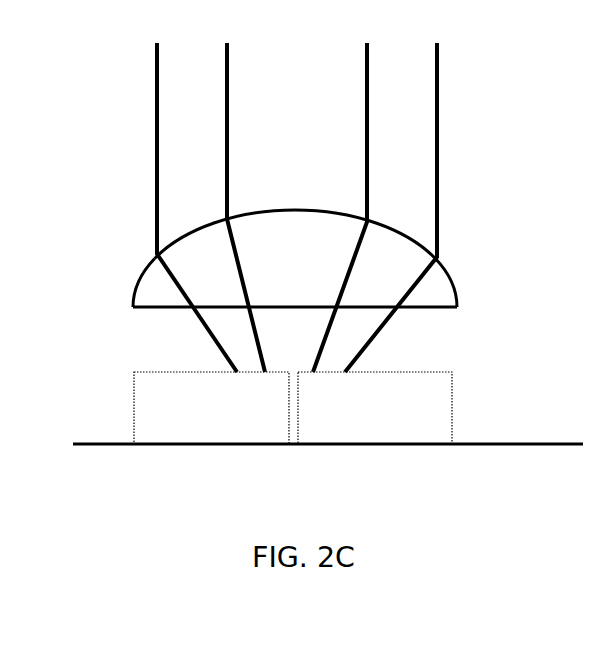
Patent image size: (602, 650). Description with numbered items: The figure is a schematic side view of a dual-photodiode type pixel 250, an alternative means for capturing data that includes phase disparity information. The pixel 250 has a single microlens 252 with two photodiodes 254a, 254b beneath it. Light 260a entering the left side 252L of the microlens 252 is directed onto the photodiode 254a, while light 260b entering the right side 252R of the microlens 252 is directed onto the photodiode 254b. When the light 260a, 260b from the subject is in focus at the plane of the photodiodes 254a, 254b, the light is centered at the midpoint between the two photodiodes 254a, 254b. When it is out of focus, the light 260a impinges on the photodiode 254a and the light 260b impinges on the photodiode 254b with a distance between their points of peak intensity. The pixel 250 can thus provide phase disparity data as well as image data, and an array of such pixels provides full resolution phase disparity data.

The pixel 250 is at (522, 192).
The microlens 252 is at (145, 262).
The left side of microlens 252L is at (139, 293).
The right side of microlens 252R is at (449, 280).
The photodiode 254a is at (150, 372).
The photodiode 254b is at (433, 372).
The light 260a is at (157, 127).
The light 260b is at (440, 110).